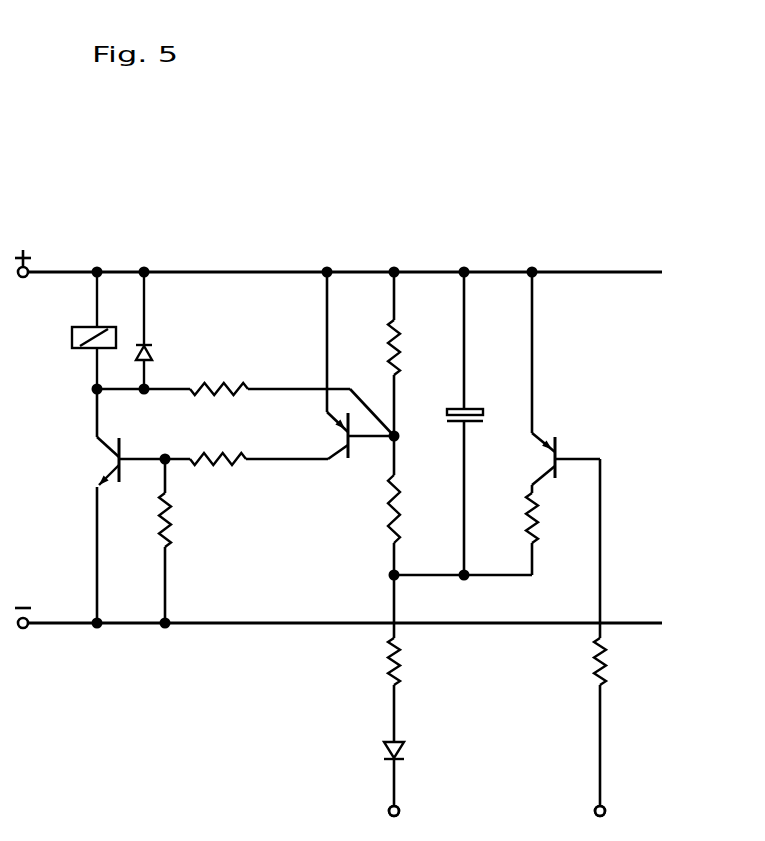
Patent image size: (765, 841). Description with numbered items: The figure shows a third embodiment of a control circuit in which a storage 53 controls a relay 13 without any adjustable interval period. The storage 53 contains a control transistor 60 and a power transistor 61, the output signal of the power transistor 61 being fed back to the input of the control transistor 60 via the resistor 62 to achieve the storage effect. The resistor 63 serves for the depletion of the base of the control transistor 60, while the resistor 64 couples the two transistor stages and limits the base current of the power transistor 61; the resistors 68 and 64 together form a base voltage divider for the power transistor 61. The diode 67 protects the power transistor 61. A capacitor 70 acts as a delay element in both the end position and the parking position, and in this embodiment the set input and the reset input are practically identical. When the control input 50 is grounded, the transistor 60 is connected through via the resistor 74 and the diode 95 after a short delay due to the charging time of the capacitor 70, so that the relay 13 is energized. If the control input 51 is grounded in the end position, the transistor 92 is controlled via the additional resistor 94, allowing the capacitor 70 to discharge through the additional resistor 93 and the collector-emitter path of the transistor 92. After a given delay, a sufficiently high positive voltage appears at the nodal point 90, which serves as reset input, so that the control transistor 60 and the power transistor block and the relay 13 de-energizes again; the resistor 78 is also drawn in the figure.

The storage 53 is at (337, 259).
The relay 13 is at (80, 346).
The diode 67 is at (152, 352).
The resistor 62 is at (216, 382).
The resistor 64 is at (224, 467).
The power transistor 61 is at (104, 487).
The resistor 68 is at (172, 530).
The control transistor 60 is at (334, 440).
The nodal point 90 is at (400, 440).
The resistor 63 is at (400, 354).
The resistor 78 is at (390, 521).
The capacitor 70 is at (478, 407).
The transistor 92 is at (560, 447).
The additional resistor 93 is at (540, 525).
The resistor 74 is at (401, 667).
The additional resistor 94 is at (604, 667).
The diode 95 is at (399, 747).
The control input 50 is at (399, 806).
The control input 51 is at (605, 806).